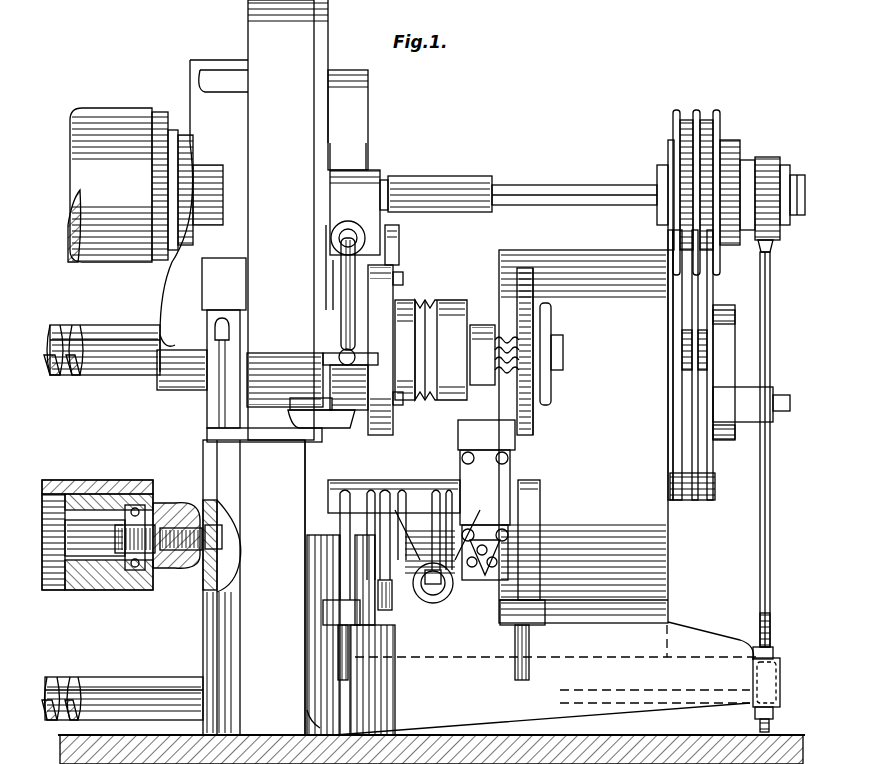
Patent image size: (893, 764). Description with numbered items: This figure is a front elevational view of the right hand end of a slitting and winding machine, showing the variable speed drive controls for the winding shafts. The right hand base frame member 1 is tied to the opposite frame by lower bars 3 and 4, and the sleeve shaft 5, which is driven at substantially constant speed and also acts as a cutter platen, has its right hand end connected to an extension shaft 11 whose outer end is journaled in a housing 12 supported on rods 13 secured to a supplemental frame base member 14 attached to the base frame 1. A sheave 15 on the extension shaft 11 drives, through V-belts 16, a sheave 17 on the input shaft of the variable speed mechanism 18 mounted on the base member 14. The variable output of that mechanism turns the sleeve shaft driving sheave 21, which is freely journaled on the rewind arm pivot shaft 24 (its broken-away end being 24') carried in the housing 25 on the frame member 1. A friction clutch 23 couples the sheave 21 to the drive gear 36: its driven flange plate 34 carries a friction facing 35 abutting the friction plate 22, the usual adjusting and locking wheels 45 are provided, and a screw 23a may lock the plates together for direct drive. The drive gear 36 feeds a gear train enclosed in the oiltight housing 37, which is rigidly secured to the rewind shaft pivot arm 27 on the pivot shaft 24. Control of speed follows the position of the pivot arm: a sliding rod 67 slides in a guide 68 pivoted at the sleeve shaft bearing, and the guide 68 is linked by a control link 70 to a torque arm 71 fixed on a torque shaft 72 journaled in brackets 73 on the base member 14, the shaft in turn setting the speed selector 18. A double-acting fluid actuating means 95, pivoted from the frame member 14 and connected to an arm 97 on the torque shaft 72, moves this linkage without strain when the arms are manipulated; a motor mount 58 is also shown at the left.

The base frame member 1 is at (215, 637).
The lower bar 3 is at (72, 686).
The lower bar 4 is at (50, 684).
The sleeve shaft 5 is at (92, 181).
The extension shaft 11 is at (582, 192).
The housing 12 is at (766, 157).
The rods 13 is at (772, 505).
The supplemental frame base member 14 is at (695, 650).
The sheave 15 is at (718, 114).
The V-belts 16 is at (702, 298).
The sheave 17 is at (712, 473).
The variable speed mechanism 18 is at (676, 570).
The sleeve shaft driving sheave 21 is at (436, 300).
The friction plate 22 is at (394, 270).
The friction clutch 23 is at (359, 438).
The screw 23a is at (399, 284).
The rewind arm pivot shaft 24 is at (322, 351).
The shaft end 24' is at (105, 315).
The housing 25 is at (213, 406).
The rewind shaft pivot arm 27 is at (178, 334).
The driven flange plate 34 is at (374, 393).
The friction facing 35 is at (378, 405).
The drive gear 36 is at (368, 325).
The gear train housing 37 is at (262, 42).
The adjusting and locking wheels 45 is at (533, 415).
The motor mount 58 is at (84, 480).
The sliding rod 67 is at (356, 228).
The sliding rod guide 68 is at (366, 190).
The control link 70 is at (388, 258).
The torque arm 71 is at (376, 482).
The torque shaft 72 is at (356, 482).
The bracket 73 is at (534, 532).
The fluid actuating means 95 is at (446, 592).
The arm 97 is at (433, 597).